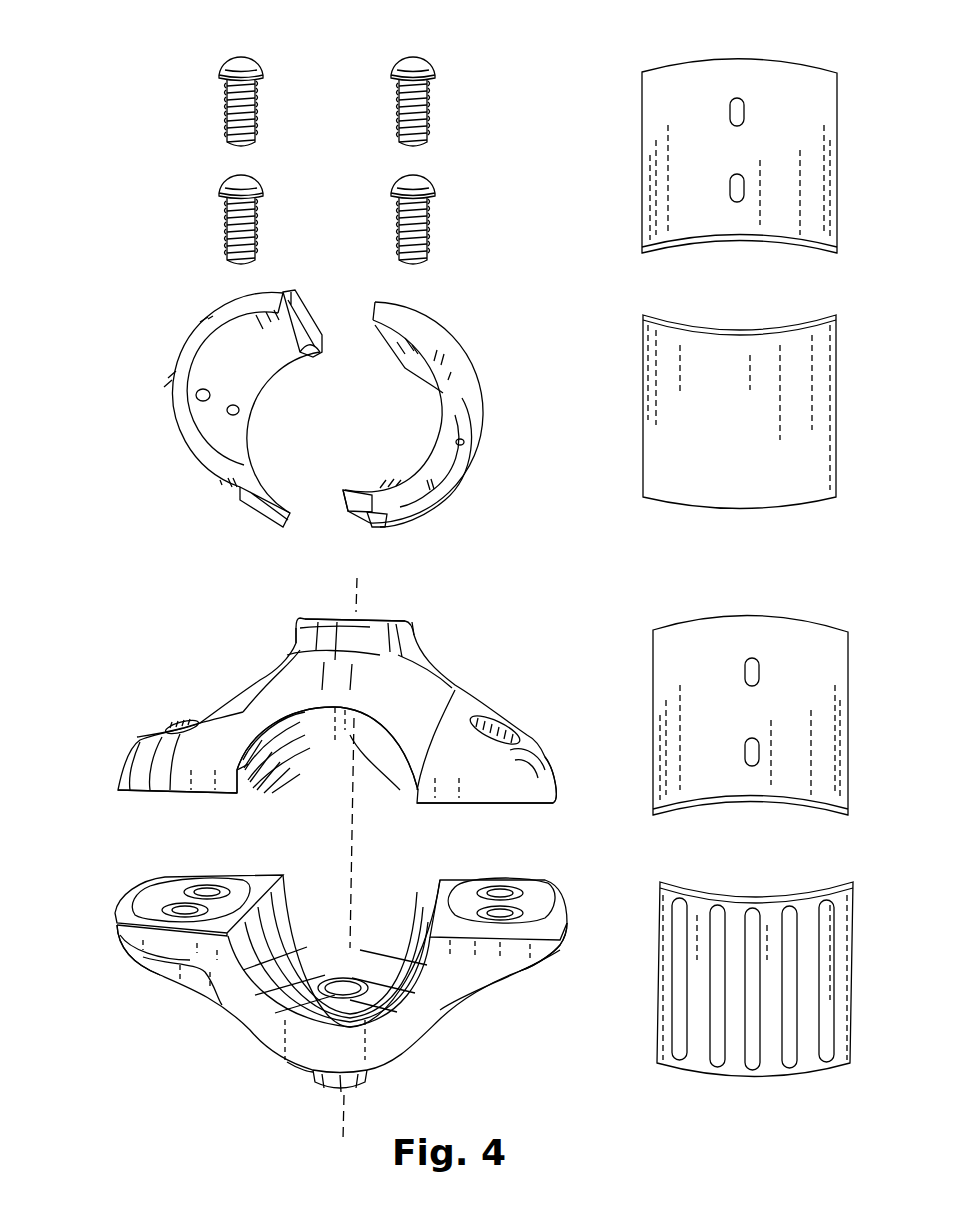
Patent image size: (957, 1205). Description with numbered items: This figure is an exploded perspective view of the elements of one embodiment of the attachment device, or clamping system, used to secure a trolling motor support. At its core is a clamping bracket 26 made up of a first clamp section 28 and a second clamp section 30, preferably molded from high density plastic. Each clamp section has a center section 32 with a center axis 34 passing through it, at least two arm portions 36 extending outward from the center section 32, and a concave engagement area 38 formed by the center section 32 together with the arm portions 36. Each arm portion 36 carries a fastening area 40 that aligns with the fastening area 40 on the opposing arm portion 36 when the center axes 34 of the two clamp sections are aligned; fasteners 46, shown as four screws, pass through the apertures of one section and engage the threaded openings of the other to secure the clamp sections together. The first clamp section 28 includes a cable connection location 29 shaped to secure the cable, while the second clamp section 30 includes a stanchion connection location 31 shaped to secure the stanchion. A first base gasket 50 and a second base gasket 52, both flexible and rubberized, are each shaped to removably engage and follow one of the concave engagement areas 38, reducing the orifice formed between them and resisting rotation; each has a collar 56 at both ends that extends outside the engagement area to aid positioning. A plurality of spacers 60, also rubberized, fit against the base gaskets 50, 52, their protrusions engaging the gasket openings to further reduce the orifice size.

The clamping bracket 26 is at (93, 935).
The first clamp section 28 is at (460, 1057).
The cable connection location 29 is at (300, 1075).
The second clamp section 30 is at (337, 688).
The stanchion connection location 31 is at (375, 620).
The center section 32 is at (417, 645).
The center axis 34 is at (340, 760).
The arm portion 36 is at (131, 752).
The concave engagement area 38 is at (327, 852).
The fastening area 40 is at (192, 715).
The fasteners 46 is at (388, 102).
The first base gasket 50 is at (225, 517).
The second base gasket 52 is at (420, 530).
The collar 56 is at (167, 443).
The spacers 60 is at (630, 175).